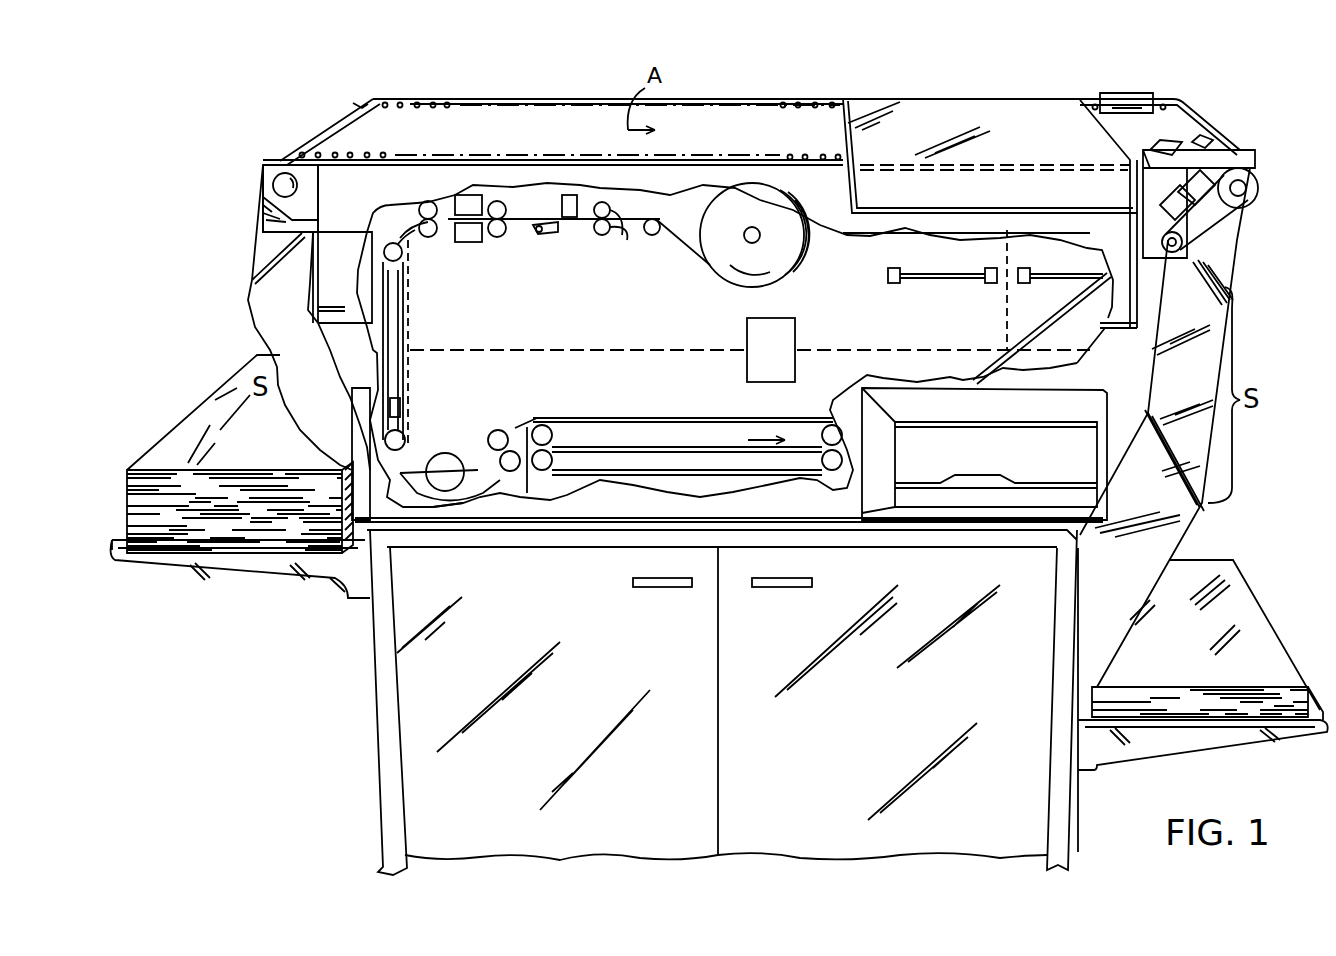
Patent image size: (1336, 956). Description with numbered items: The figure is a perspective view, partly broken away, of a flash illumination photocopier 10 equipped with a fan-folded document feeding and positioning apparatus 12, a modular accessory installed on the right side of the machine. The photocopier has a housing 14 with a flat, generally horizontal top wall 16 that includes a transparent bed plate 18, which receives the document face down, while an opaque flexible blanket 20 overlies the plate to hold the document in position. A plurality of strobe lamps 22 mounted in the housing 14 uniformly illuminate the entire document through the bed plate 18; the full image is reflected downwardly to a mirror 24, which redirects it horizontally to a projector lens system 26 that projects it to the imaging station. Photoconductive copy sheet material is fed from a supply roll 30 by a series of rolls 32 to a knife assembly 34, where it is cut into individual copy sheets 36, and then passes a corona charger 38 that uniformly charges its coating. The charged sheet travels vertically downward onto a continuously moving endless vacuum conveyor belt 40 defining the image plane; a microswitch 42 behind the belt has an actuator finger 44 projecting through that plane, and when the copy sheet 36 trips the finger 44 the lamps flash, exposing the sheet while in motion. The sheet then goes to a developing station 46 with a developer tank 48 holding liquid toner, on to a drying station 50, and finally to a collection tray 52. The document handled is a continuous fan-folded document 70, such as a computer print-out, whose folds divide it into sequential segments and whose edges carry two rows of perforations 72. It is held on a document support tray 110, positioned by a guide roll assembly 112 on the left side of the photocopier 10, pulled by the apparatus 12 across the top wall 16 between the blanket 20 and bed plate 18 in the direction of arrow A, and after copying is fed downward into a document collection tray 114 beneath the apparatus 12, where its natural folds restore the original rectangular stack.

The flash illumination photocopier 10 is at (848, 62).
The fan-folded document feeding and positioning apparatus 12 is at (1245, 120).
The housing 14 is at (330, 212).
The top wall 16 is at (510, 98).
The transparent bed plate 18 is at (1027, 163).
The flexible blanket 20 is at (1025, 105).
The flash illumination or strobe lamps 22 is at (1022, 283).
The mirror 24 is at (1040, 322).
The projector lens system 26 is at (748, 332).
The supply roll 30 is at (780, 258).
The rolls 32 is at (655, 237).
The knife assembly 34 is at (569, 240).
The copy sheets 36 is at (403, 265).
The corona charger 38 is at (468, 200).
The endless vacuum conveyor belt 40 is at (390, 293).
The microswitch 42 is at (398, 393).
The actuator finger 44 is at (420, 418).
The developing station 46 is at (466, 442).
The developer tank 48 is at (462, 490).
The drying station 50 is at (672, 397).
The collection tray 52 is at (1010, 462).
The fan-folded document 70 is at (178, 432).
The perforations 72 is at (815, 102).
The document support tray 110 is at (245, 565).
The guide roll assembly 112 is at (302, 115).
The document collection tray 114 is at (1240, 733).